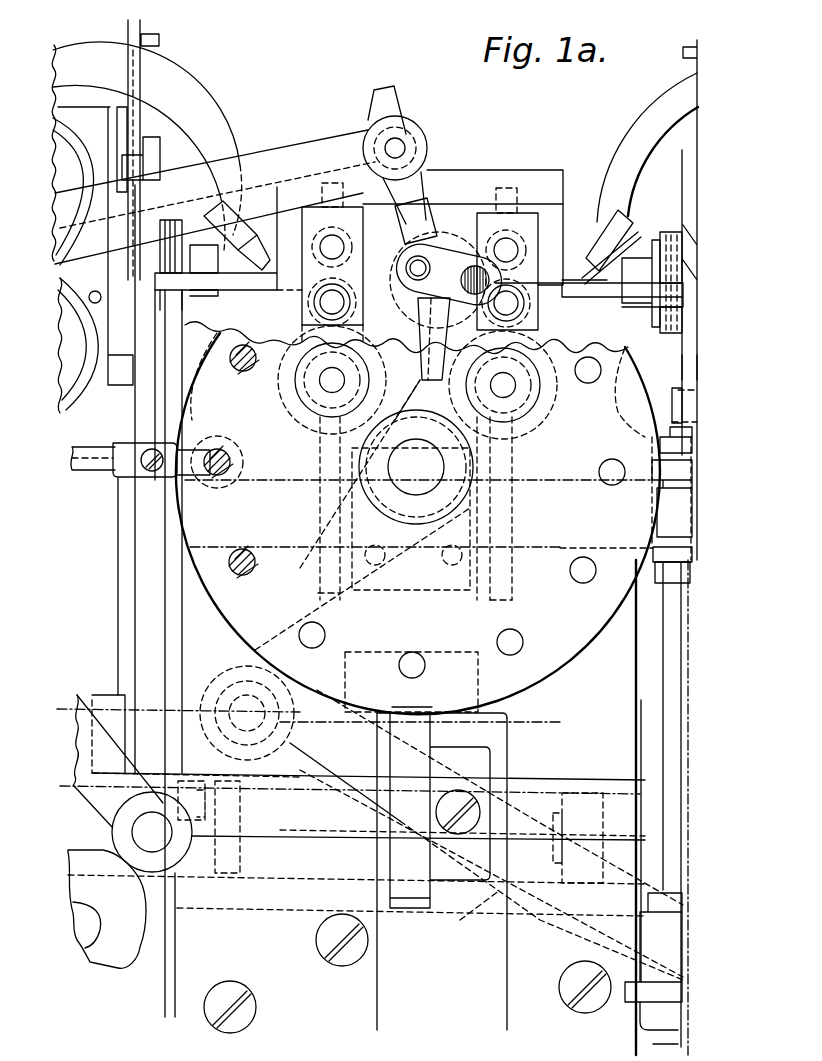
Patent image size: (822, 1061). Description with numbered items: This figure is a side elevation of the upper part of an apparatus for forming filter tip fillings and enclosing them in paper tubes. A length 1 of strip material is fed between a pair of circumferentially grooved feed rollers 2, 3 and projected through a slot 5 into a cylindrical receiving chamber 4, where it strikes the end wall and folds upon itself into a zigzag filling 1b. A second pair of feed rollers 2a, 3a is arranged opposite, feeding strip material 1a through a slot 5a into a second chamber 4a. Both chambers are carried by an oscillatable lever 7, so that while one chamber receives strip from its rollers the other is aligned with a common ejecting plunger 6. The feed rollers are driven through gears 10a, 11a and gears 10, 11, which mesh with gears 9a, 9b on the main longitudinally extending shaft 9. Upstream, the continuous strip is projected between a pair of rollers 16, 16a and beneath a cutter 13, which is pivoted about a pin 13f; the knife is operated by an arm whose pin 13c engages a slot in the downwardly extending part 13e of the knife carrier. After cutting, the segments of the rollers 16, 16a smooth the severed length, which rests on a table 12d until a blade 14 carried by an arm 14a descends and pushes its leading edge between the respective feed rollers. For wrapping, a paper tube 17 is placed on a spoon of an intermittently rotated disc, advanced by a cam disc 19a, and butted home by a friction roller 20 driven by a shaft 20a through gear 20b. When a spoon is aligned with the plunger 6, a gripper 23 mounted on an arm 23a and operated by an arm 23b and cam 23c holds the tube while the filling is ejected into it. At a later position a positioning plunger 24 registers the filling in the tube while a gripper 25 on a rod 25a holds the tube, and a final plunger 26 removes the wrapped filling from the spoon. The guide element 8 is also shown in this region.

The length of strip material 1 is at (565, 278).
The strip material 1a is at (145, 278).
The filling 1b is at (243, 345).
The feed roller 2 is at (482, 278).
The feed roller 2a is at (402, 240).
The feed roller 3 is at (526, 313).
The feed roller 3a is at (420, 308).
The cylindrical receiving chamber 4 is at (472, 270).
The chamber 4a is at (409, 262).
The slot 5 is at (508, 265).
The slot 5a is at (414, 282).
The ejecting plunger 6 is at (420, 302).
The oscillatable lever 7 is at (390, 578).
The guide 8 is at (480, 912).
The main shaft 9 is at (593, 553).
The gear 9a is at (512, 596).
The gear 9b is at (318, 588).
The gear 10 is at (528, 402).
The gear 10a is at (542, 377).
The gear 11 is at (302, 395).
The gear 11a is at (283, 378).
The table 12d is at (583, 292).
The cutter 13 is at (133, 52).
The pin 13c is at (677, 400).
The downwardly extending part 13e is at (692, 360).
The pin 13f is at (652, 265).
The blade 14 is at (258, 262).
The arm 14a is at (172, 95).
The roller 16 is at (70, 125).
The roller 16a is at (86, 392).
The paper tube 17 is at (600, 470).
The cam disc 19a is at (398, 898).
The friction roller 20 is at (668, 477).
The shaft 20a is at (665, 657).
The gear 20b is at (648, 992).
The gripper 23 is at (418, 226).
The arm 23a is at (332, 147).
The arm 23b is at (90, 700).
The cam 23c is at (123, 925).
The positioning plunger 24 is at (240, 470).
The gripper 25 is at (208, 478).
The rod 25a is at (96, 477).
The plunger 26 is at (245, 548).